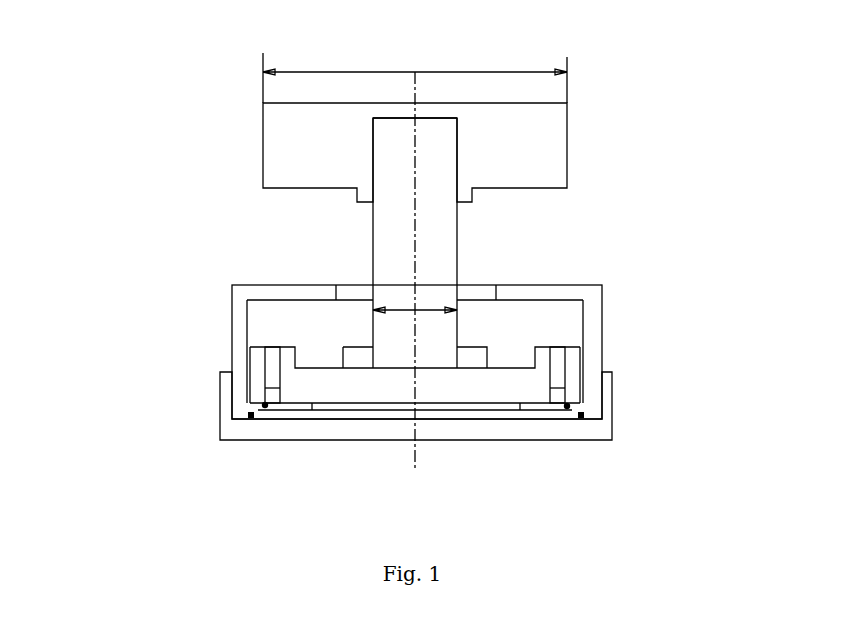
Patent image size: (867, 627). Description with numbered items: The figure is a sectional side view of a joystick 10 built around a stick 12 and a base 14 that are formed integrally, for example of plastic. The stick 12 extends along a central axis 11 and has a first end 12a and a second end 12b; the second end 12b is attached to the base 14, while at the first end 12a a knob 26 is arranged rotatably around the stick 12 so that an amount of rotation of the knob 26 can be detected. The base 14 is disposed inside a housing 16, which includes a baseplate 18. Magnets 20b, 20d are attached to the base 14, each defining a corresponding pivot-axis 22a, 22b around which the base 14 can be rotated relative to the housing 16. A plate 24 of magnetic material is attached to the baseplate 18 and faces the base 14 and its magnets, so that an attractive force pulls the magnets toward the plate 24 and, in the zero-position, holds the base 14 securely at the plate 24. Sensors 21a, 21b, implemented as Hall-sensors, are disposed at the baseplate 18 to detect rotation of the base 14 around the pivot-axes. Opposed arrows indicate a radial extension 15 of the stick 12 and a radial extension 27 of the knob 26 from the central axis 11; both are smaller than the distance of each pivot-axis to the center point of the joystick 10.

The joystick 10 is at (401, 270).
The central axis 11 is at (415, 396).
The stick 12 is at (391, 245).
The first end 12a is at (398, 141).
The second end 12b is at (383, 338).
The base 14 is at (399, 359).
The radial extension 15 is at (425, 306).
The housing 16 is at (554, 293).
The baseplate 18 is at (513, 429).
The magnet 20b is at (561, 352).
The magnet 20d is at (270, 372).
The sensor 21a is at (581, 415).
The sensor 21b is at (251, 415).
The pivot-axis 22a is at (265, 405).
The pivot-axis 22b is at (567, 406).
The plate 24 is at (332, 415).
The knob 26 is at (311, 144).
The radial extension 27 is at (488, 68).